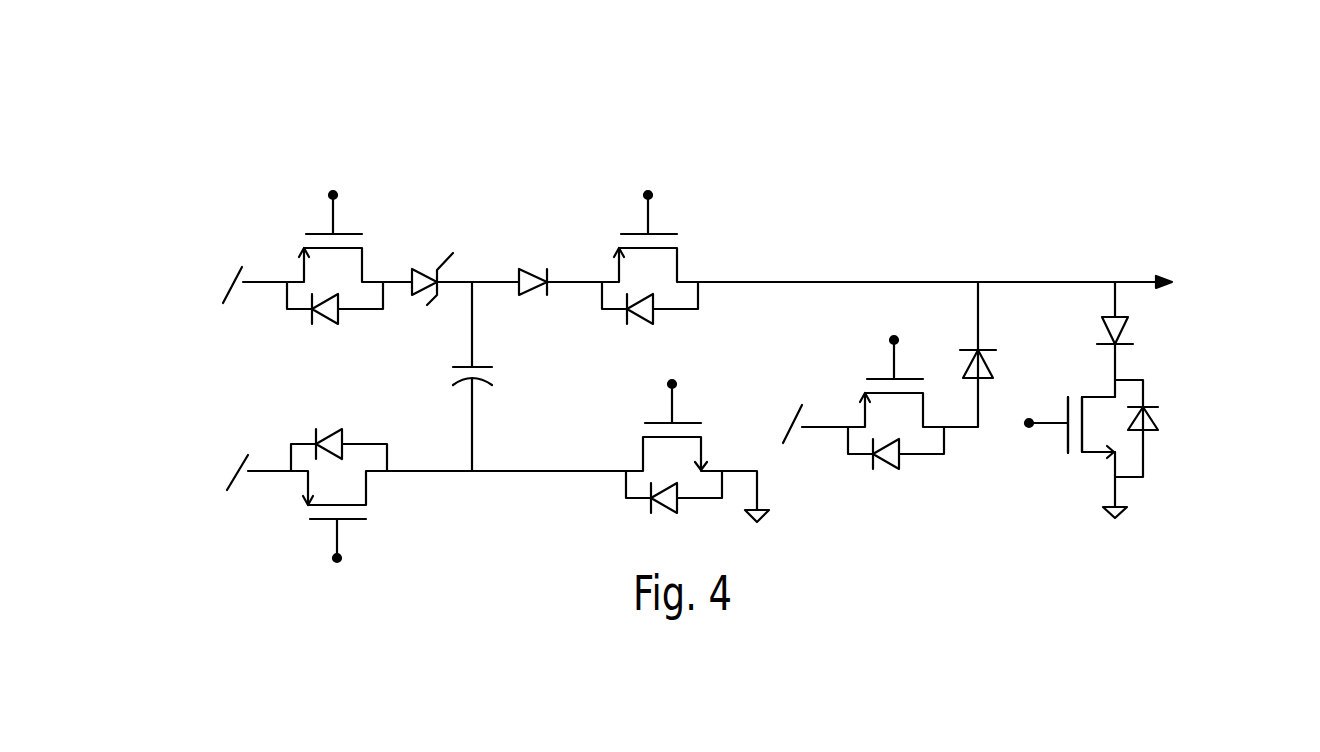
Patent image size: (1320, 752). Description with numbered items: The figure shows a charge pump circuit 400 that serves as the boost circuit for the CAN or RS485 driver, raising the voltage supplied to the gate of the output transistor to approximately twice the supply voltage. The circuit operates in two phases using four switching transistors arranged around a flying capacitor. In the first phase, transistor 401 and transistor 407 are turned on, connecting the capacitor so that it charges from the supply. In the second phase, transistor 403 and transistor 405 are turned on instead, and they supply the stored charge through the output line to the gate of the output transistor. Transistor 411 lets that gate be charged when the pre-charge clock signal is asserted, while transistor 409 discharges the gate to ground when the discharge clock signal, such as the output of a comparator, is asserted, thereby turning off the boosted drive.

The charge pump circuit 400 is at (877, 167).
The transistor 401 is at (287, 230).
The transistor 403 is at (297, 504).
The transistor 405 is at (598, 240).
The transistor 407 is at (631, 437).
The transistor 409 is at (1057, 477).
The transistor 411 is at (851, 378).